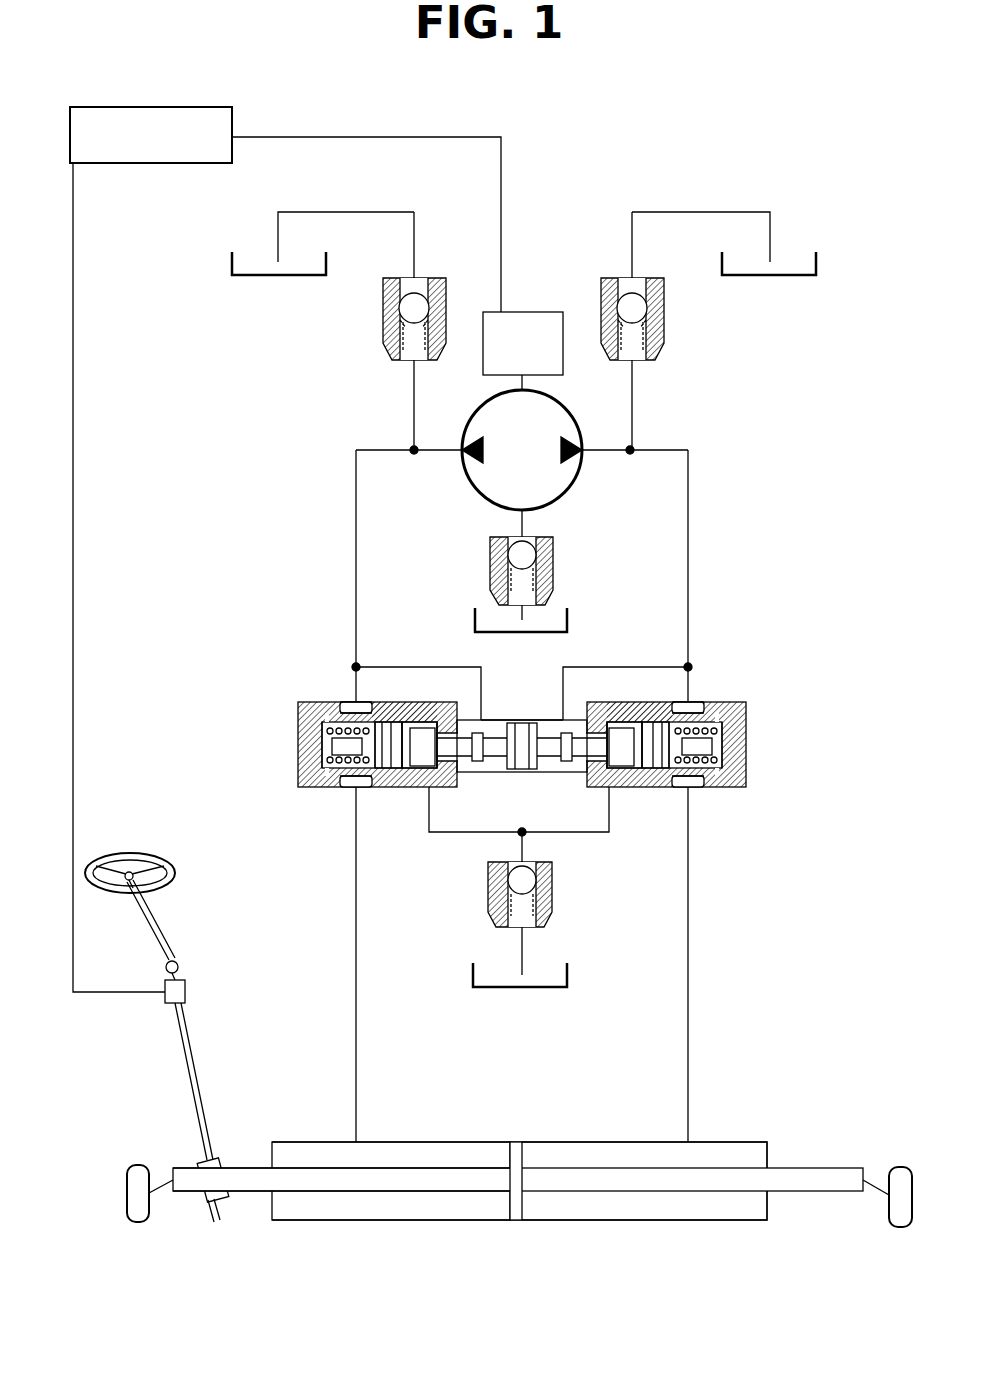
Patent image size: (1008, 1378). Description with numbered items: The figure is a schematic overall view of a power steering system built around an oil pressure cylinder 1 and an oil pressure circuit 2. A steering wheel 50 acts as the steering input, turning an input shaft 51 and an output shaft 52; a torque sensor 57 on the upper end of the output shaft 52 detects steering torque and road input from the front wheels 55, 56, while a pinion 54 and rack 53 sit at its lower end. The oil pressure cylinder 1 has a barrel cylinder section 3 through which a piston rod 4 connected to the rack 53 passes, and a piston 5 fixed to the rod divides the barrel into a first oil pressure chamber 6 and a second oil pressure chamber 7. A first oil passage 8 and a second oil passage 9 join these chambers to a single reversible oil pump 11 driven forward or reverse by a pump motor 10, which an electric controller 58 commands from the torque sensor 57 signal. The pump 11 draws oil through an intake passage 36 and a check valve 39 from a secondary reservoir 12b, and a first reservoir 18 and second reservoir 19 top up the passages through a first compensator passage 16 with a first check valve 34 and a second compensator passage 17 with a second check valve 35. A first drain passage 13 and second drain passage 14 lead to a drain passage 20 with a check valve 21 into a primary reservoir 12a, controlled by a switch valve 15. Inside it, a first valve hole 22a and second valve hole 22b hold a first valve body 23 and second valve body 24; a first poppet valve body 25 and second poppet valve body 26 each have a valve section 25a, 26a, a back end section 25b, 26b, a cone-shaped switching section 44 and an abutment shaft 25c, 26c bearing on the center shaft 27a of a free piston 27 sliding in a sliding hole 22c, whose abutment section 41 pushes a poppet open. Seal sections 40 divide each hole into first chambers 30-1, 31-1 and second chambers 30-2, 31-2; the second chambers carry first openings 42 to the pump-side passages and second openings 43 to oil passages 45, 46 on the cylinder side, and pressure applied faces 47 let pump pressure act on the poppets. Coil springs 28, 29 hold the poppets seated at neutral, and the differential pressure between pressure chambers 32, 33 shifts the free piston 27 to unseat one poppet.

The oil pressure cylinder 1 is at (518, 1165).
The oil pressure circuit 2 is at (727, 903).
The barrel cylinder section 3 is at (722, 1143).
The piston rod 4 is at (806, 1168).
The piston 5 is at (514, 1152).
The first oil pressure chamber 6 is at (555, 1156).
The second oil pressure chamber 7 is at (440, 1156).
The first oil passage 8 is at (688, 516).
The second oil passage 9 is at (356, 496).
The pump motor 10 is at (525, 312).
The reversible oil pump 11 is at (578, 475).
The primary reservoir 12a is at (567, 975).
The secondary reservoir 12b is at (475, 608).
The first drain passage 13 is at (655, 702).
The second drain passage 14 is at (380, 702).
The switch valve 15 is at (297, 745).
The first compensator passage 16 is at (414, 401).
The second compensator passage 17 is at (632, 401).
The first reservoir 18 is at (273, 278).
The second reservoir 19 is at (789, 278).
The drain passage 20 is at (530, 866).
The check valve 21 is at (550, 900).
The first valve hole 22a is at (705, 703).
The second valve hole 22b is at (345, 703).
The sliding hole 22c is at (546, 720).
The first valve body 23 is at (745, 776).
The second valve body 24 is at (300, 766).
The first poppet valve body 25 is at (634, 790).
The valve section 25a is at (604, 790).
The back end section 25b is at (620, 790).
The abutment shaft 25c is at (586, 720).
The second poppet valve body 26 is at (426, 790).
The valve section 26a is at (440, 790).
The back end section 26b is at (410, 790).
The abutment shaft 26c is at (462, 720).
The free piston 27 is at (512, 723).
The center shaft 27a is at (519, 833).
The coil spring 28 is at (745, 748).
The coil spring 29 is at (305, 730).
The first chamber 30-1 is at (660, 712).
The second chamber 30-2 is at (700, 782).
The first chamber 31-1 is at (422, 720).
The second chamber 31-2 is at (350, 786).
The pressure chamber 32 is at (549, 772).
The pressure chamber 33 is at (492, 772).
The first check valve 34 is at (408, 308).
The second check valve 35 is at (640, 308).
The intake passage 36 is at (522, 530).
The check valve 39 is at (535, 553).
The seal section 40 is at (355, 706).
The abutment section 41 is at (480, 733).
The first opening 42 is at (330, 706).
The second opening 43 is at (345, 790).
The switching section 44 is at (440, 782).
The oil passage 45 is at (688, 1026).
The oil passage 46 is at (356, 1036).
The pressure applied face 47 is at (340, 778).
The steering wheel 50 is at (135, 853).
The input shaft 51 is at (160, 918).
The output shaft 52 is at (204, 1078).
The rack 53 is at (247, 1192).
The pinion 54 is at (208, 1206).
The front left wheel 55 is at (140, 1224).
The front right wheel 56 is at (895, 1229).
The torque sensor 57 is at (186, 991).
The electric controller 58 is at (233, 120).